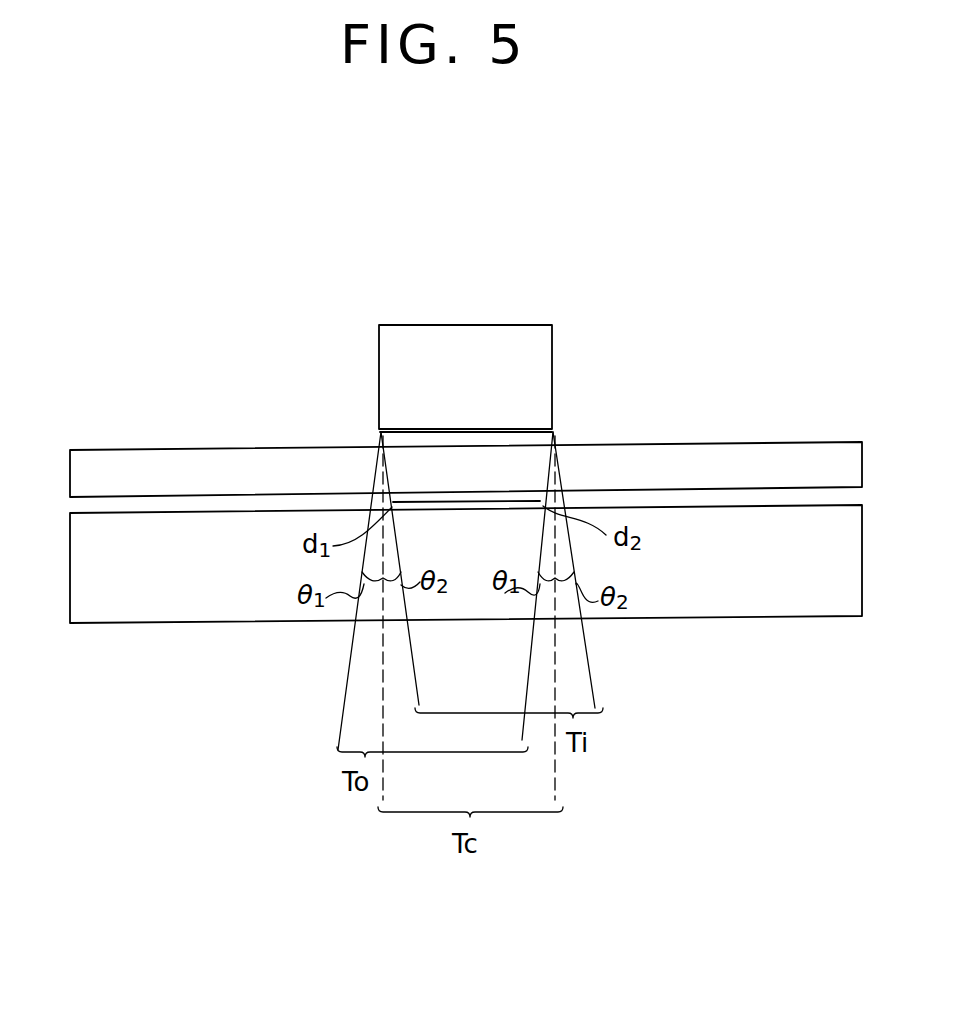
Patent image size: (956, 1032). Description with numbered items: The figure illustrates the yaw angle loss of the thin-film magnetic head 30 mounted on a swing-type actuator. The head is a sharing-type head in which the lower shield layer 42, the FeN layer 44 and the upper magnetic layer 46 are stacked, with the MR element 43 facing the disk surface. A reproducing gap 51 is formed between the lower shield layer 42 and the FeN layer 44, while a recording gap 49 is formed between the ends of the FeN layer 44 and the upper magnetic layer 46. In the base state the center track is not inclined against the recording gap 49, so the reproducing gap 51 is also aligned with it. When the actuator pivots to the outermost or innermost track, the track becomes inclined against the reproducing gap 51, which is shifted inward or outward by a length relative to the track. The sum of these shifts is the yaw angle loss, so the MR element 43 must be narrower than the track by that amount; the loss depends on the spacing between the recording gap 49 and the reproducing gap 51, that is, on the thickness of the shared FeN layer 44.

The thin-film magnetic head 30 is at (386, 252).
The lower shield layer 42 is at (822, 600).
The MR element 43 is at (432, 499).
The FeN layer 44 is at (800, 453).
The upper magnetic layer 46 is at (379, 337).
The recording gap 49 is at (473, 437).
The reproducing gap 51 is at (507, 504).